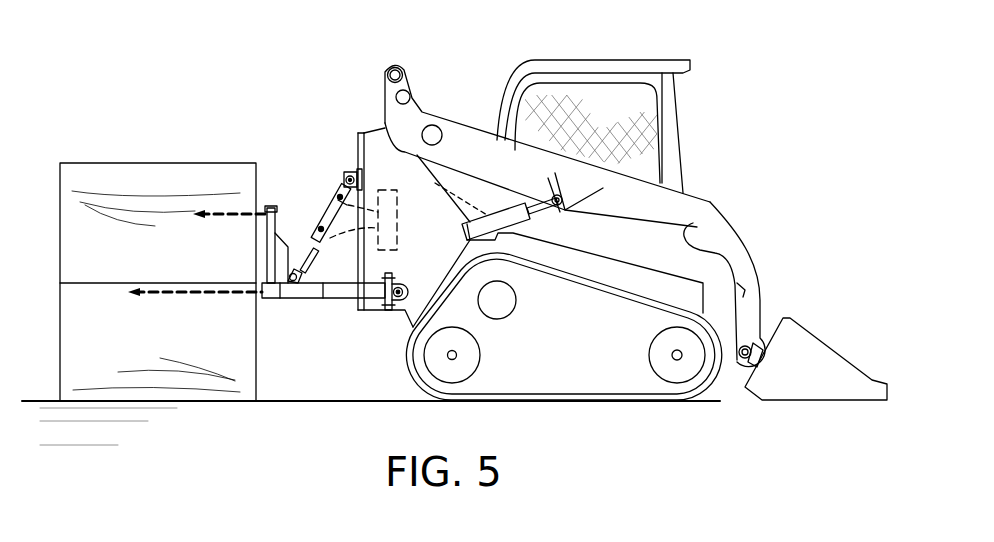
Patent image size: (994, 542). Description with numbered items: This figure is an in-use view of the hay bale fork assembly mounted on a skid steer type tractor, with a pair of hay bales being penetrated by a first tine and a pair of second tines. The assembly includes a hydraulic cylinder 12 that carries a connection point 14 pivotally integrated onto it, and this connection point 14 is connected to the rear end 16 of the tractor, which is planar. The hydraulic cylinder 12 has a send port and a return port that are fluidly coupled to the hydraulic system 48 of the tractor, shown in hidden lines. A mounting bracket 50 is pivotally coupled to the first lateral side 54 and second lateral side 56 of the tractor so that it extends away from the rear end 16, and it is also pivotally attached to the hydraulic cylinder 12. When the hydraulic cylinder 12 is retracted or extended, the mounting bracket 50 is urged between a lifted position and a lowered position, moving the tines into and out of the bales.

The hydraulic cylinder 12 is at (325, 222).
The connection point 14 is at (352, 170).
The rear end 16 is at (357, 255).
The hydraulic system 48 is at (395, 188).
The mounting bracket 50 is at (337, 298).
The first lateral side 54 is at (423, 220).
The second lateral side 56 is at (433, 240).